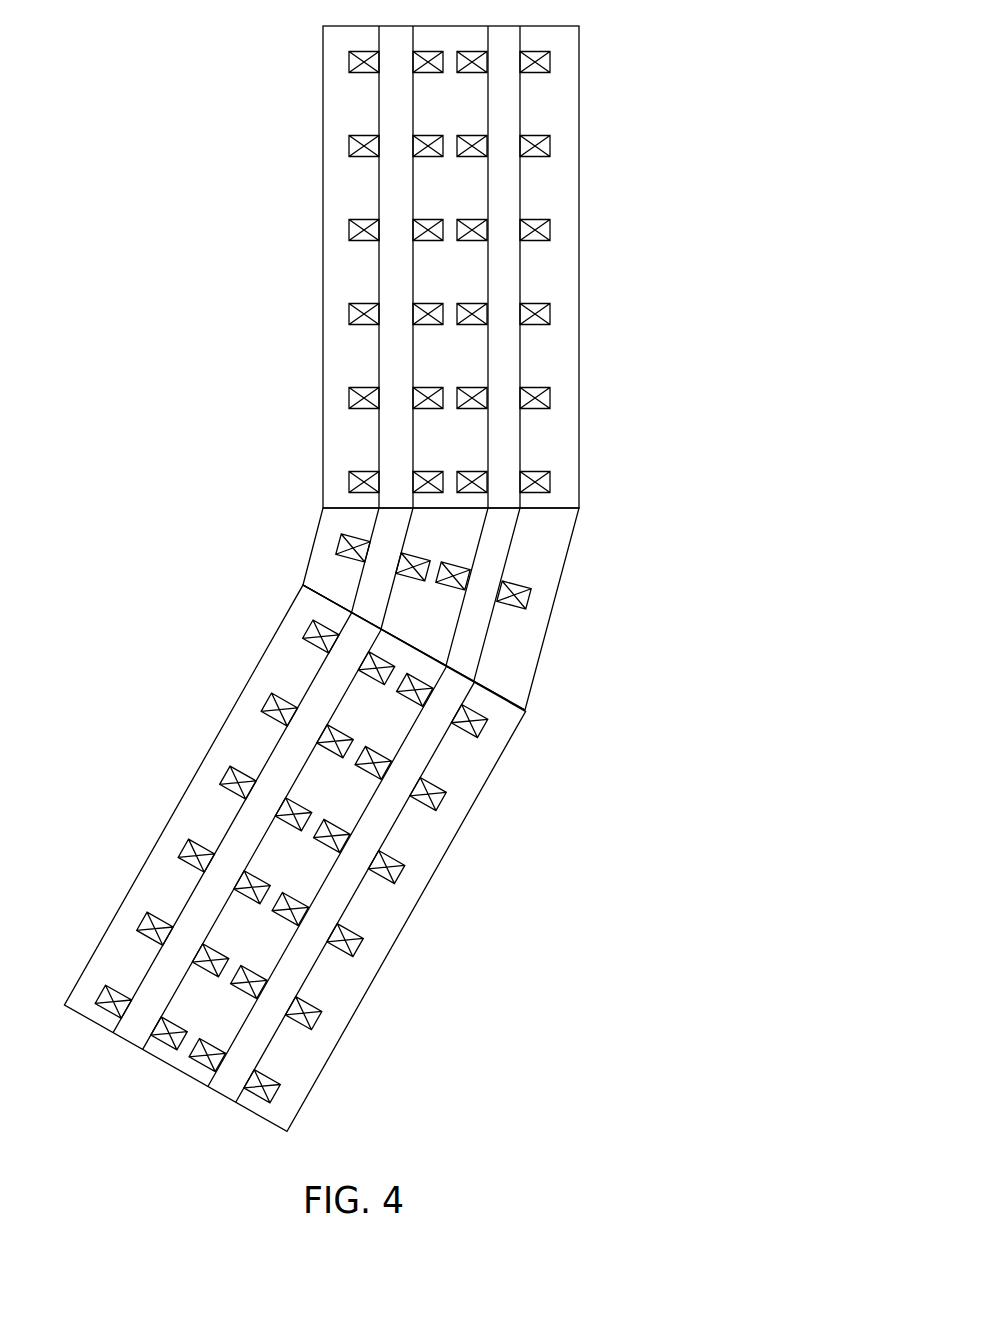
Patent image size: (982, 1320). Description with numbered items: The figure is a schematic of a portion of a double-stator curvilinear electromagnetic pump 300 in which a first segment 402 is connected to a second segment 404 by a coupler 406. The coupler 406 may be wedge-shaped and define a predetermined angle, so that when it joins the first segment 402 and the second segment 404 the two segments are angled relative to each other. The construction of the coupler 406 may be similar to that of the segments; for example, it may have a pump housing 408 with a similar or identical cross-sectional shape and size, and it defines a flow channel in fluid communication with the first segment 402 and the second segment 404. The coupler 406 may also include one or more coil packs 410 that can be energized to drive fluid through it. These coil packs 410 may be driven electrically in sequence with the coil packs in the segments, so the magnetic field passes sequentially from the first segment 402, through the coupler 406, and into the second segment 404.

The double-stator curvilinear electromagnetic pump 300 is at (165, 106).
The first segment 402 is at (581, 225).
The second segment 404 is at (478, 802).
The coupler 406 is at (552, 630).
The pump housing 408 is at (535, 680).
The coil packs 410 is at (522, 600).